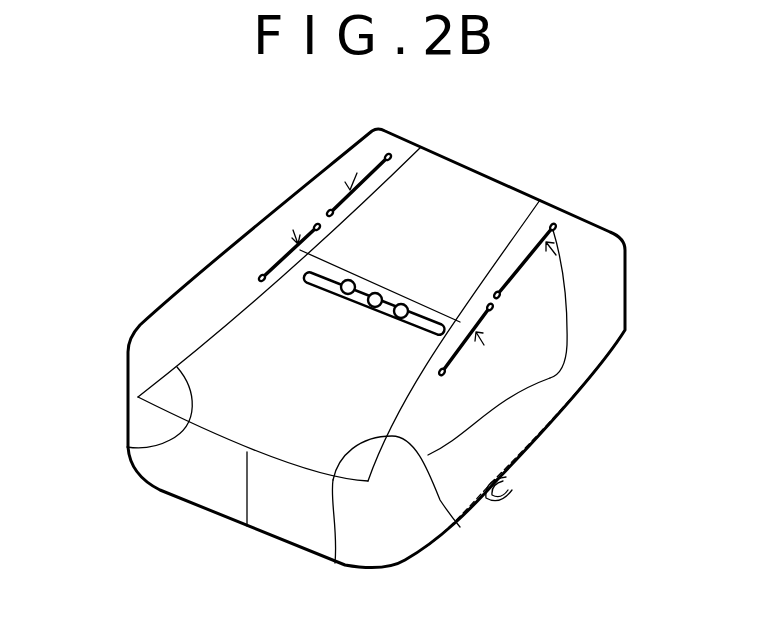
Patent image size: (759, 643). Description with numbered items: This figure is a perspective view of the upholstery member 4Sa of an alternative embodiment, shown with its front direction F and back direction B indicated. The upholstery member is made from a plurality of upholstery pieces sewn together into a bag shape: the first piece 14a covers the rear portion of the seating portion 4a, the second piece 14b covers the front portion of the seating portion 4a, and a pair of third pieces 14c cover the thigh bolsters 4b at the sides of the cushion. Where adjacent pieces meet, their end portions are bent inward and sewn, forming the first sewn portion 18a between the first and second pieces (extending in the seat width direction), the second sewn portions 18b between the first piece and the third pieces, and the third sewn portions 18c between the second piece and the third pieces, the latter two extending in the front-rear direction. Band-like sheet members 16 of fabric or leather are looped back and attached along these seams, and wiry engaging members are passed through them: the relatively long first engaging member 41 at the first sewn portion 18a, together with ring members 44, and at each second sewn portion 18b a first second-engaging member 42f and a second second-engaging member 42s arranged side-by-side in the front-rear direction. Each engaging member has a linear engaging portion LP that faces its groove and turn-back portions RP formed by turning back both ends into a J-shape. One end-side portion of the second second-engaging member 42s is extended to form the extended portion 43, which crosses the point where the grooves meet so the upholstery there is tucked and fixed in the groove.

The seat cushion pad 4Sa is at (530, 162).
The seating portion 4a is at (287, 427).
The thigh bolsters 4b is at (224, 323).
The first piece 14a is at (567, 358).
The second piece 14b is at (455, 522).
The third pieces 14c is at (172, 314).
The sheet members 16 is at (349, 365).
The first sewn portion 18a is at (380, 296).
The second sewn portion 18b is at (421, 153).
The third sewn portion 18c is at (127, 447).
The first engaging member 41 is at (346, 296).
The first second-engaging member 42f is at (386, 156).
The second second-engaging member 42s is at (300, 240).
The extended portion 43 is at (262, 282).
The ring member 44 is at (415, 308).
The turn-back portions RP is at (386, 152).
The engaging portion LP is at (351, 190).
The back direction B is at (568, 72).
The front direction F is at (198, 583).